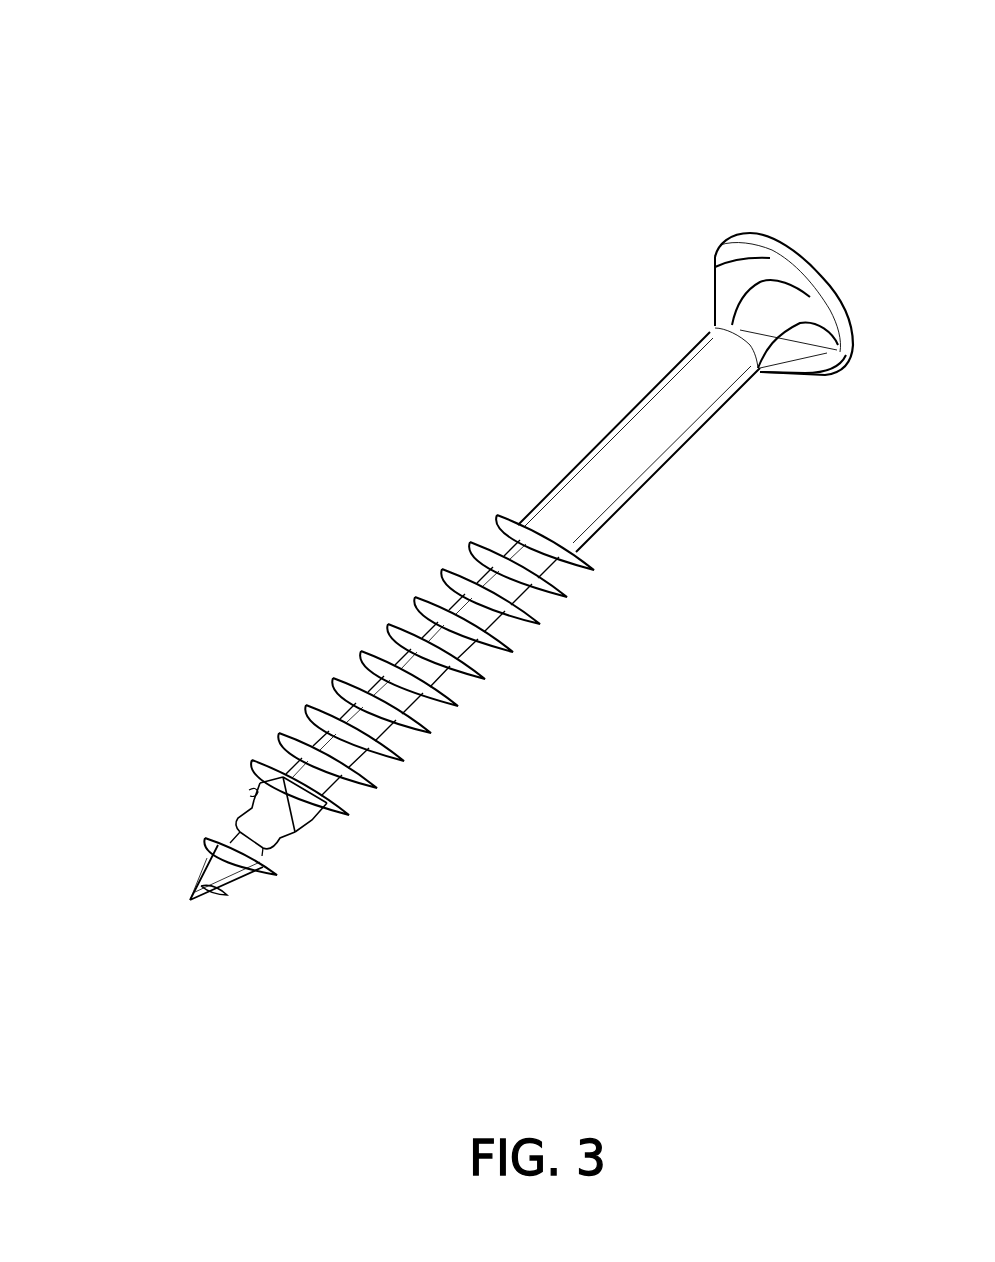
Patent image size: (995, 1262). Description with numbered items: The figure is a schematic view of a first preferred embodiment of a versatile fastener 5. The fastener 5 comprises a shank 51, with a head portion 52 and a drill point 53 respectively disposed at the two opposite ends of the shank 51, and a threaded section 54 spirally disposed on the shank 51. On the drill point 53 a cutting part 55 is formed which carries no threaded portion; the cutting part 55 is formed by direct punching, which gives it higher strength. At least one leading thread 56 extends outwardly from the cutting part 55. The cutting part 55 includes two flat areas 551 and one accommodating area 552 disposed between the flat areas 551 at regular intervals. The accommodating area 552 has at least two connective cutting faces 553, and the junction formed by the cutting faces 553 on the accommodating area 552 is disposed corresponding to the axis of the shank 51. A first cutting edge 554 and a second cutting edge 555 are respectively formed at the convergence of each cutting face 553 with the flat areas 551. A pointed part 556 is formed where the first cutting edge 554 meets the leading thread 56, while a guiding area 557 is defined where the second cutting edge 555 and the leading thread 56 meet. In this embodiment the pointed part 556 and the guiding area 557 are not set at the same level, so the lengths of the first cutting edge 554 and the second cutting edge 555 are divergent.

The versatile fastener 5 is at (347, 142).
The shank 51 is at (674, 461).
The head portion 52 is at (719, 243).
The drill point 53 is at (240, 762).
The threaded section 54 is at (538, 614).
The cutting part 55 is at (318, 822).
The flat area 551 is at (305, 823).
The accommodating area 552 is at (250, 808).
The cutting face 553 is at (250, 797).
The first cutting edge 554 is at (255, 782).
The second cutting edge 555 is at (306, 824).
The pointed part 556 is at (255, 832).
The guiding area 557 is at (273, 842).
The leading thread 56 is at (220, 893).